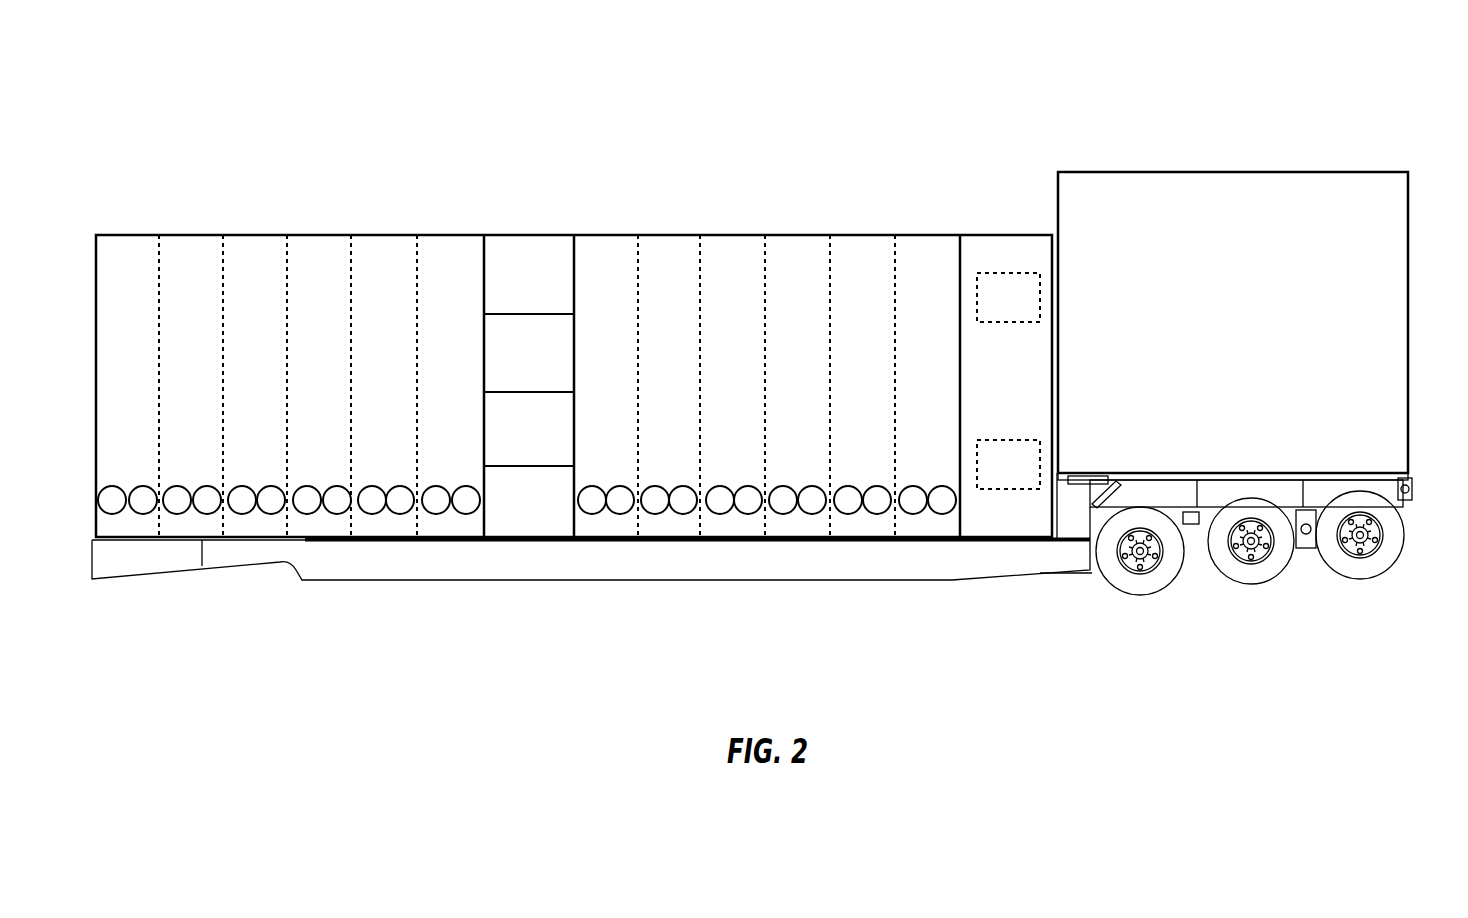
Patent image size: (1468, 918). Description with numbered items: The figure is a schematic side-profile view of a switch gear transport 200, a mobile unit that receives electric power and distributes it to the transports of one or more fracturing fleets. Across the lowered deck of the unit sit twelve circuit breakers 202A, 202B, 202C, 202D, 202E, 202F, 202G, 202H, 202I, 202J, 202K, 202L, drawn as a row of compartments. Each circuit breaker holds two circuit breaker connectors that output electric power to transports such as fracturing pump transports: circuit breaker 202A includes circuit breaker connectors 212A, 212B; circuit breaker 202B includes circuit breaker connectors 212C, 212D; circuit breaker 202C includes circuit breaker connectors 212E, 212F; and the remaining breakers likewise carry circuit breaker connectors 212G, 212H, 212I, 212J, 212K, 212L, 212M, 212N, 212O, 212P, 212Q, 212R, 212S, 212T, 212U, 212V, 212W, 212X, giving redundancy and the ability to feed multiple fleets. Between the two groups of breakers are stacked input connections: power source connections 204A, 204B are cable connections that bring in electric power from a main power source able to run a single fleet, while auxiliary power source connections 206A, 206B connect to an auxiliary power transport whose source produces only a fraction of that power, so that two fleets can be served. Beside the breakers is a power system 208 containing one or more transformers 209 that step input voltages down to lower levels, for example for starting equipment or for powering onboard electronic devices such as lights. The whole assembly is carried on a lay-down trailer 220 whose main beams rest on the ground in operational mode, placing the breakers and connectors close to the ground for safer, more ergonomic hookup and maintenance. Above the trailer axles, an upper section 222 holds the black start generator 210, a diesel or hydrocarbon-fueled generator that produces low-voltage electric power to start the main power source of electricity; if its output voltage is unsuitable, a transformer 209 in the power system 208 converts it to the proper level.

The switch gear transport 200 is at (247, 113).
The circuit breaker 202A is at (149, 269).
The circuit breaker 202B is at (213, 269).
The circuit breaker 202C is at (277, 269).
The circuit breaker 202D is at (341, 269).
The circuit breaker 202E is at (405, 269).
The circuit breaker 202F is at (471, 269).
The circuit breaker 202G is at (628, 269).
The circuit breaker 202H is at (691, 269).
The circuit breaker 202I is at (752, 269).
The circuit breaker 202J is at (817, 269).
The circuit breaker 202K is at (884, 269).
The circuit breaker 202L is at (948, 269).
The power source connection 204A is at (551, 284).
The power source connection 204B is at (551, 364).
The auxiliary power source connection 206A is at (551, 445).
The auxiliary power source connection 206B is at (551, 515).
The power system 208 is at (1025, 398).
The transformer 209 is at (1025, 310).
The black start generator 210 is at (1244, 331).
The circuit breaker connector 212A is at (112, 514).
The circuit breaker connector 212B is at (143, 514).
The circuit breaker connector 212C is at (177, 514).
The circuit breaker connector 212D is at (207, 514).
The circuit breaker connector 212E is at (242, 514).
The circuit breaker connector 212F is at (271, 514).
The circuit breaker connector 212G is at (307, 514).
The circuit breaker connector 212H is at (337, 514).
The circuit breaker connector 212I is at (372, 514).
The circuit breaker connector 212J is at (400, 514).
The circuit breaker connector 212K is at (436, 514).
The circuit breaker connector 212L is at (466, 514).
The circuit breaker connector 212M is at (592, 514).
The circuit breaker connector 212N is at (620, 514).
The circuit breaker connector 212O is at (655, 514).
The circuit breaker connector 212P is at (683, 514).
The circuit breaker connector 212Q is at (720, 514).
The circuit breaker connector 212R is at (748, 514).
The circuit breaker connector 212S is at (783, 514).
The circuit breaker connector 212T is at (812, 514).
The circuit breaker connector 212U is at (848, 514).
The circuit breaker connector 212V is at (877, 514).
The circuit breaker connector 212W is at (913, 514).
The circuit breaker connector 212X is at (942, 514).
The lay-down trailer 220 is at (1042, 567).
The upper section 222 is at (1410, 496).